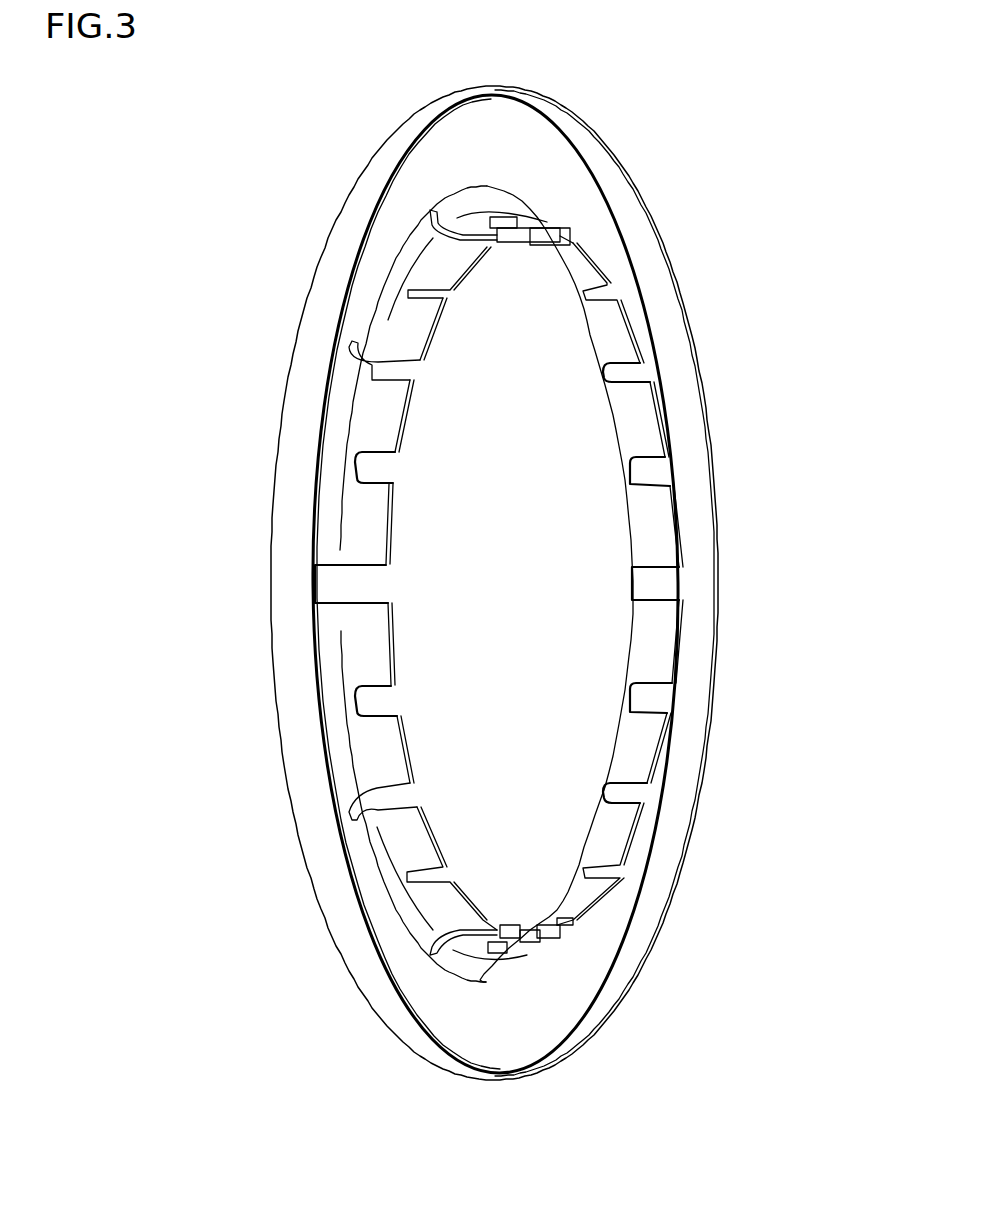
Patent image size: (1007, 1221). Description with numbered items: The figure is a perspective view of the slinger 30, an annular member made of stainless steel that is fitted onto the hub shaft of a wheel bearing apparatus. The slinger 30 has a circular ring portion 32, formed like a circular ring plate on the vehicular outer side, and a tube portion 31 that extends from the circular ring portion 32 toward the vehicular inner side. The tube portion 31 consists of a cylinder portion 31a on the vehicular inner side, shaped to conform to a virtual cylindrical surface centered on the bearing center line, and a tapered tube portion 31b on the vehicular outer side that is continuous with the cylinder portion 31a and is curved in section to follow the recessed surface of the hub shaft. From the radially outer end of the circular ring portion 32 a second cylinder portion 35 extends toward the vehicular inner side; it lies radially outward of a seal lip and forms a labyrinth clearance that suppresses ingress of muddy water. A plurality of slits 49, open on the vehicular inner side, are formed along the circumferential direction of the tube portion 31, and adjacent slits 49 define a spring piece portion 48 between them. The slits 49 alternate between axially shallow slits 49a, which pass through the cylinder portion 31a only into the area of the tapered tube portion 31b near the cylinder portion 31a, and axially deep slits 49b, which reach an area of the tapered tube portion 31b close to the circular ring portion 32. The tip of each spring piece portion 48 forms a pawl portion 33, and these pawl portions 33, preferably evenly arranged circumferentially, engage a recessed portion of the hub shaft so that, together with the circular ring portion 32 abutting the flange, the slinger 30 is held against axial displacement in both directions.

The slinger 30 is at (657, 218).
The tube portion 31 is at (444, 584).
The cylinder portion 31a is at (412, 327).
The tapered tube portion 31b is at (380, 313).
The circular ring portion 32 is at (517, 153).
The pawl portion 33 is at (390, 525).
The second cylinder portion 35 is at (368, 192).
The spring piece portion 48 is at (360, 518).
The slit 49 is at (654, 585).
The shallow slit 49a is at (390, 472).
The deep slit 49b is at (386, 582).